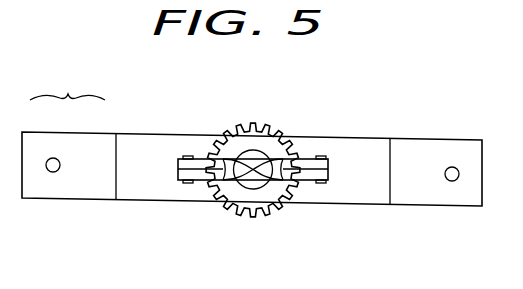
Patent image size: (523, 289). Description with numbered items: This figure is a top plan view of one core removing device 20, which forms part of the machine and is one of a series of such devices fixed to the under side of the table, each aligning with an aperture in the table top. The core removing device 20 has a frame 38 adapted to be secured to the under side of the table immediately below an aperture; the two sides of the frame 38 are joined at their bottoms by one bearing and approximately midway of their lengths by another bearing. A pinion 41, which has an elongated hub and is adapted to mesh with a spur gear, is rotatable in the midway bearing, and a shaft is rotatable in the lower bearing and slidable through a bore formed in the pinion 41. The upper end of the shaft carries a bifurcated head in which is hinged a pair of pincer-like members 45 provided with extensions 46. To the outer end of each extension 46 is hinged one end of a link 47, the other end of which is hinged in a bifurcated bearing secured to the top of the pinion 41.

The core removing device 20 is at (67, 84).
The frame 38 is at (367, 148).
The pinion 41 is at (237, 142).
The pincer-like members 45 is at (233, 178).
The extensions 46 is at (195, 172).
The link 47 is at (228, 174).